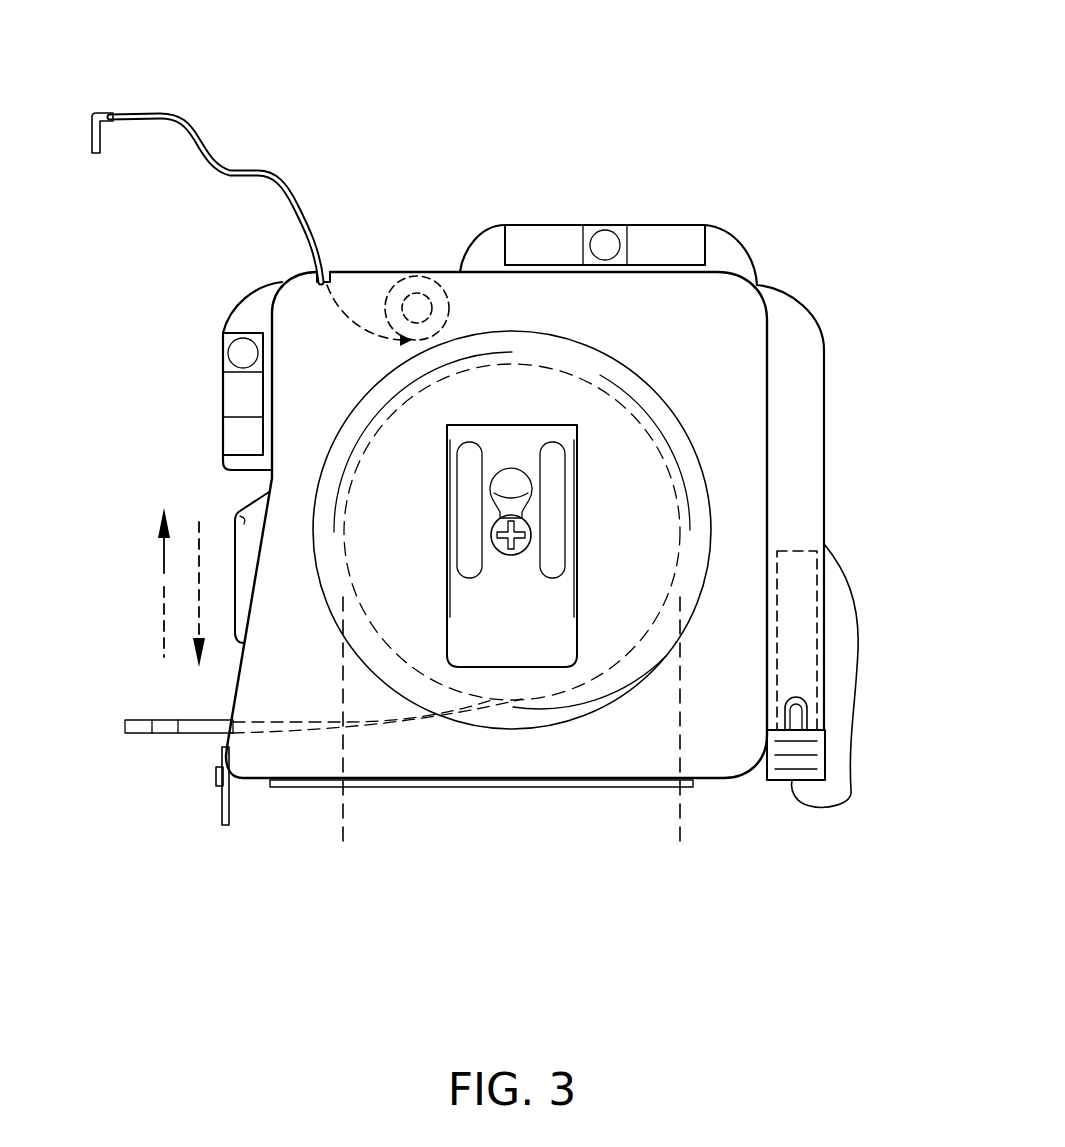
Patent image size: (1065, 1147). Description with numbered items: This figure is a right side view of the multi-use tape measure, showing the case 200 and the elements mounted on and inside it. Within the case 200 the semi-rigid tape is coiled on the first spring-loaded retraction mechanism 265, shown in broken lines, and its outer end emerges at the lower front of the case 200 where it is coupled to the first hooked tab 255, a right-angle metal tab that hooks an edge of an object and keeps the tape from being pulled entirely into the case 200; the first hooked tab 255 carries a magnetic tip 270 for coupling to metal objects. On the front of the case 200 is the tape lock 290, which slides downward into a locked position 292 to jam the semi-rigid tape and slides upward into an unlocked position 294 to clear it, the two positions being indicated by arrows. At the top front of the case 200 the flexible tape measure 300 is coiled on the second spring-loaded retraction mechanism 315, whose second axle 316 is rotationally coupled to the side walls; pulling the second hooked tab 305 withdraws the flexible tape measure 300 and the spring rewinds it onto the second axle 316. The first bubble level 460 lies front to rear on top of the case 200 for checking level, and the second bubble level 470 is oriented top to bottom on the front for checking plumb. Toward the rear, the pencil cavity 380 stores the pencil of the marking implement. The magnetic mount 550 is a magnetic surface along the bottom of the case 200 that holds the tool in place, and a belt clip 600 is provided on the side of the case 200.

The case 200 is at (720, 781).
The first hooked tab 255 is at (229, 808).
The first spring-loaded retraction mechanism 265 is at (680, 853).
The magnetic tip 270 is at (215, 773).
The tape lock 290 is at (237, 512).
The locked position 292 is at (200, 595).
The unlocked position 294 is at (165, 573).
The flexible tape measure 300 is at (242, 167).
The second hooked tab 305 is at (97, 113).
The second spring-loaded retraction mechanism 315 is at (390, 293).
The second axle 316 is at (415, 295).
The pencil cavity 380 is at (797, 551).
The first bubble level 460 is at (497, 200).
The second bubble level 470 is at (200, 337).
The magnetic mount 550 is at (300, 787).
The belt clip 600 is at (577, 438).